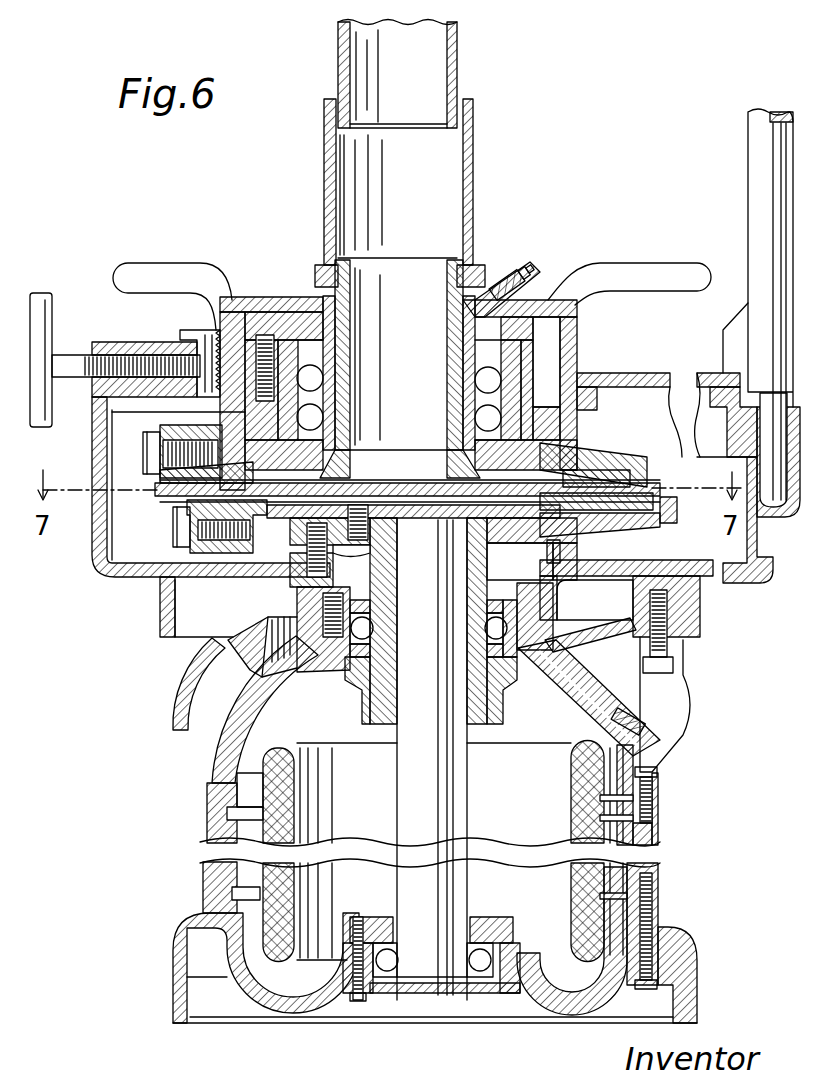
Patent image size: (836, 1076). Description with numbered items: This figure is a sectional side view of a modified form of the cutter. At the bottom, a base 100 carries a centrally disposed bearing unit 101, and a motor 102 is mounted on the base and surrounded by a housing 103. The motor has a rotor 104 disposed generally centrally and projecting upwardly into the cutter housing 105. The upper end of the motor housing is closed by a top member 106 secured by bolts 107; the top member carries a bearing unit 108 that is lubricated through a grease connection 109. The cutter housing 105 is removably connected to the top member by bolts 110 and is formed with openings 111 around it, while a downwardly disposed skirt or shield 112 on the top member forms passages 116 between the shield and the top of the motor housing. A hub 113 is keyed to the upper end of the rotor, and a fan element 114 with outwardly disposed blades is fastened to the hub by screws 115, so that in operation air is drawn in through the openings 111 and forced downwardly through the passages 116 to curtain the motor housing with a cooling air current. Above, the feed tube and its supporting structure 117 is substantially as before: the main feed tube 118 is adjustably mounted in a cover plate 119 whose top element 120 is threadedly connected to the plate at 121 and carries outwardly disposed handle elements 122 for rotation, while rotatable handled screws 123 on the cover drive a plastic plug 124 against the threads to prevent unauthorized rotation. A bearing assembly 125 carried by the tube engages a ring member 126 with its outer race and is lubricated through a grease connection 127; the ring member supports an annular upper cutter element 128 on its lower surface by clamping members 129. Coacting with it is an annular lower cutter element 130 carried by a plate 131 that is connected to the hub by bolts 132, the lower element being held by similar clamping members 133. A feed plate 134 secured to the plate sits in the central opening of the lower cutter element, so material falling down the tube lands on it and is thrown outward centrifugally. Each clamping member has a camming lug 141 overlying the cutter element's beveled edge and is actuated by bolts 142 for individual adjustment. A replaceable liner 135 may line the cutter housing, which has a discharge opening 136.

The base 100 is at (690, 934).
The bearing unit 101 is at (400, 973).
The motor 102 is at (652, 792).
The housing 103 is at (626, 868).
The rotor 104 is at (453, 871).
The cutter housing 105 is at (98, 578).
The top member 106 is at (210, 772).
The bolts 107 is at (660, 768).
The bearing unit 108 is at (367, 640).
The grease connection 109 is at (637, 719).
The bolts 110 is at (675, 666).
The openings 111 is at (195, 654).
The skirt or shield 112 is at (178, 711).
The hub 113 is at (305, 584).
The fan element 114 is at (560, 597).
The screws 115 is at (560, 551).
The passages 116 is at (212, 748).
The feed tube and its supporting structure 117 is at (491, 148).
The main feed tube 118 is at (447, 355).
The cover plate 119 is at (653, 372).
The top element 120 is at (518, 304).
The threaded connection 121 is at (578, 338).
The handle elements 122 is at (175, 270).
The rotatable handled screws 123 is at (50, 328).
The plug 124 is at (213, 328).
The bearing assembly 125 is at (324, 417).
The ring member 126 is at (543, 400).
The grease connection 127 is at (527, 266).
The upper cutter element 128 is at (606, 470).
The clamping members 129 is at (167, 426).
The lower cutter element 130 is at (640, 507).
The plate 131 is at (677, 524).
The bolts 132 is at (305, 597).
The clamping members 133 is at (215, 507).
The feed plate 134 is at (430, 515).
The replaceable liner 135 is at (118, 532).
The discharge opening 136 is at (758, 538).
The camming lug 141 is at (185, 490).
The bolts 142 is at (143, 446).